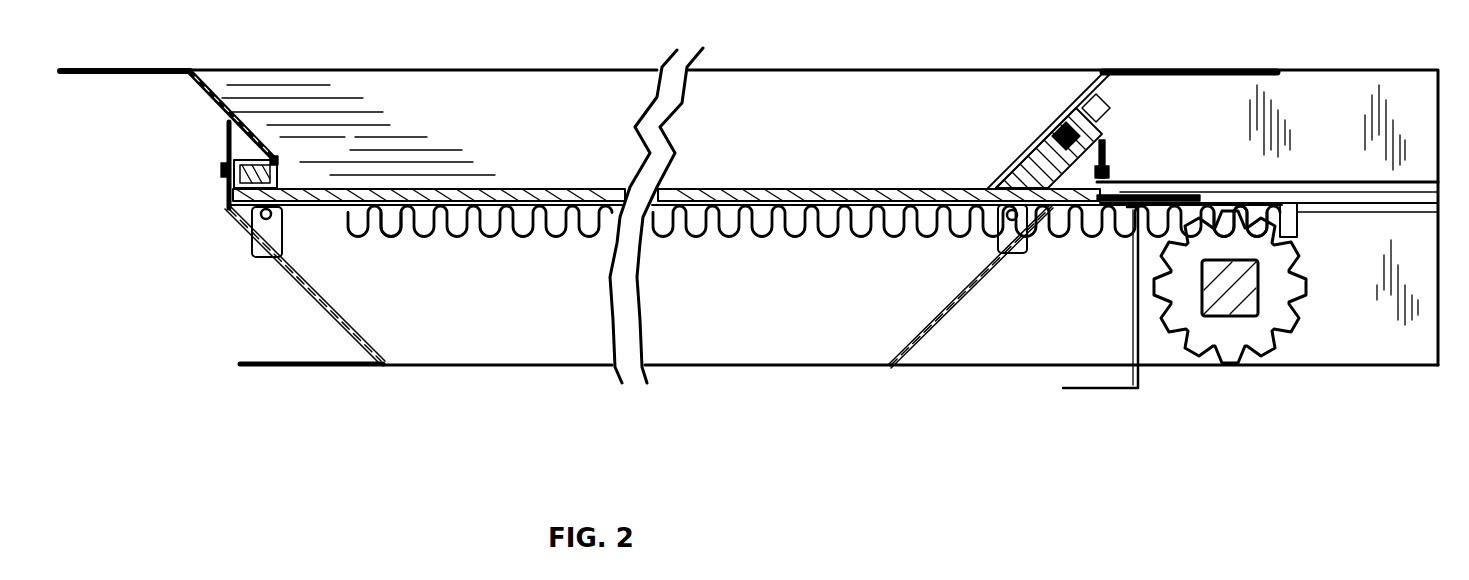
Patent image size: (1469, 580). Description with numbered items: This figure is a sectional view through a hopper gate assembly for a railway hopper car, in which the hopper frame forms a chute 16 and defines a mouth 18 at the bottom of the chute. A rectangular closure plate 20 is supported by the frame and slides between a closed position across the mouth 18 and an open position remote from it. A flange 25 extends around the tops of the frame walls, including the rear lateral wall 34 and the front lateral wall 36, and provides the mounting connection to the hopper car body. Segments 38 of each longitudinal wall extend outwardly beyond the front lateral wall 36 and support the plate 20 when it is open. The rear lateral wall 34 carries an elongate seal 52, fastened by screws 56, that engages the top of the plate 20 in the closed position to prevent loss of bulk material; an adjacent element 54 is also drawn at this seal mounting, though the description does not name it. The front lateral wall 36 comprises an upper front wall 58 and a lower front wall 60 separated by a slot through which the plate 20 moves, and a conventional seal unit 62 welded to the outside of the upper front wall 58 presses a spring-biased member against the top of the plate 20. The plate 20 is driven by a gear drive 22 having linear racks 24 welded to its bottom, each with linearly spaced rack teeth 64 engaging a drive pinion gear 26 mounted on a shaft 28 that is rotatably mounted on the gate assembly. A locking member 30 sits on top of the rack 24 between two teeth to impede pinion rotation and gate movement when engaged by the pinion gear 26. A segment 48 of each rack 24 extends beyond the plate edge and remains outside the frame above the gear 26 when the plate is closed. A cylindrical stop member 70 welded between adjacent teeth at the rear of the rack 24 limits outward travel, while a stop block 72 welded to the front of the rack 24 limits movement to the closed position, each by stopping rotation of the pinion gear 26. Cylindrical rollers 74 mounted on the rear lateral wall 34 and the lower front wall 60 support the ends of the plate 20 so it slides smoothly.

The chute 16 is at (820, 205).
The mouth 18 is at (556, 376).
The closure plate 20 is at (705, 190).
The gear drive 22 is at (1265, 315).
The linear rack 24 is at (782, 209).
The flange 25 is at (91, 69).
The drive pinion gear 26 is at (1268, 282).
The shaft 28 is at (1217, 317).
The locking member 30 is at (1155, 197).
The rear lateral wall 34 is at (250, 233).
The front lateral wall 36 is at (1027, 142).
The segment of longitudinal wall 38 is at (1330, 68).
The rack segment 48 is at (1247, 215).
The elongate seal 52 is at (280, 165).
The vertical plate 54 is at (228, 186).
The screw 56 is at (222, 168).
The upper front wall 58 is at (1098, 82).
The lower front wall 60 is at (970, 290).
The seal unit 62 is at (1128, 127).
The rack teeth 64 is at (812, 225).
The cylindrical stop member 70 is at (378, 214).
The stop block 72 is at (1291, 222).
The cylindrical roller 74 is at (283, 208).